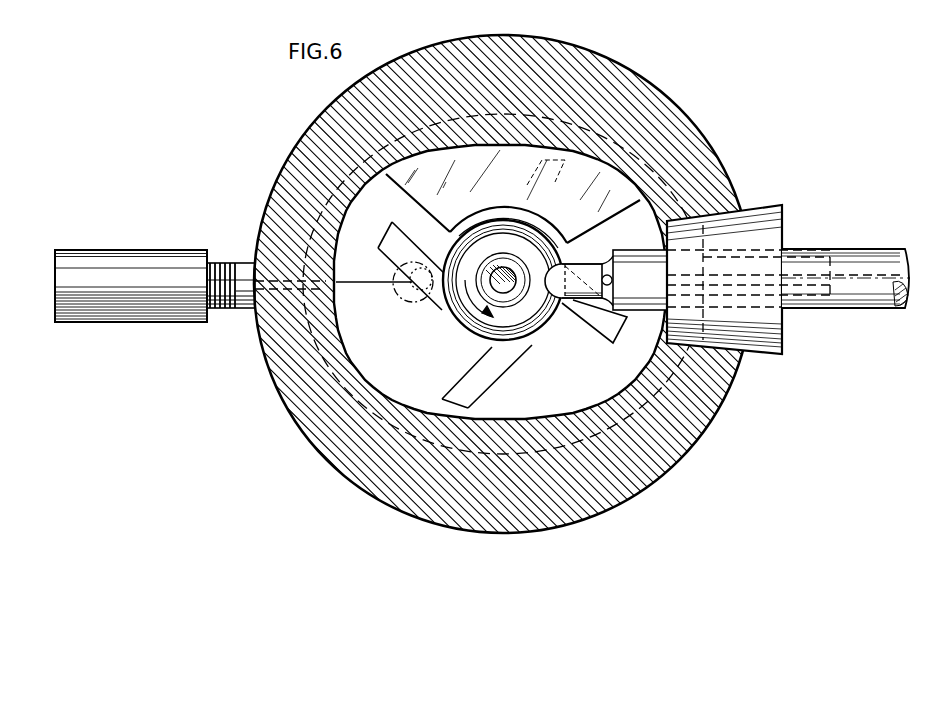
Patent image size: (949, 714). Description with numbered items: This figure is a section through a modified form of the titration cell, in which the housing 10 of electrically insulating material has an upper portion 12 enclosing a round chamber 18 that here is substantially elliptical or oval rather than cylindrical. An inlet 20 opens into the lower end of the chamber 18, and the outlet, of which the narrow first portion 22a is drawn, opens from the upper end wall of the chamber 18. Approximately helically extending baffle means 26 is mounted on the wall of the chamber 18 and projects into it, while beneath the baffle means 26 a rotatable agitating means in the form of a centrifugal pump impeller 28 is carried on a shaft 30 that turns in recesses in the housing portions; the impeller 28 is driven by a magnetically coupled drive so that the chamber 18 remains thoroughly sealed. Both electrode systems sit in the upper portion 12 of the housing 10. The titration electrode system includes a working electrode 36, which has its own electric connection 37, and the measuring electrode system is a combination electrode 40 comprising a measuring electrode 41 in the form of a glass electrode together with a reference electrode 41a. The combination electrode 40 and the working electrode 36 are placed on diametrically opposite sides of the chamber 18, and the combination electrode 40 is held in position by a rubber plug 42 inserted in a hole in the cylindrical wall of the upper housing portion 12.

The housing 10 is at (732, 378).
The upper portion 12 is at (700, 414).
The round chamber 18 is at (494, 376).
The inlet 20 is at (813, 293).
The first portion of the outlet 22a is at (418, 292).
The baffle means 26 is at (513, 199).
The centrifugal pump impeller 28 is at (560, 301).
The shaft 30 is at (500, 292).
The working electrode 36 is at (372, 284).
The electric connection 37 is at (163, 222).
The combination electrode 40 is at (852, 250).
The measuring electrode 41 is at (587, 268).
The reference electrode 41a is at (606, 275).
The rubber plug 42 is at (770, 223).